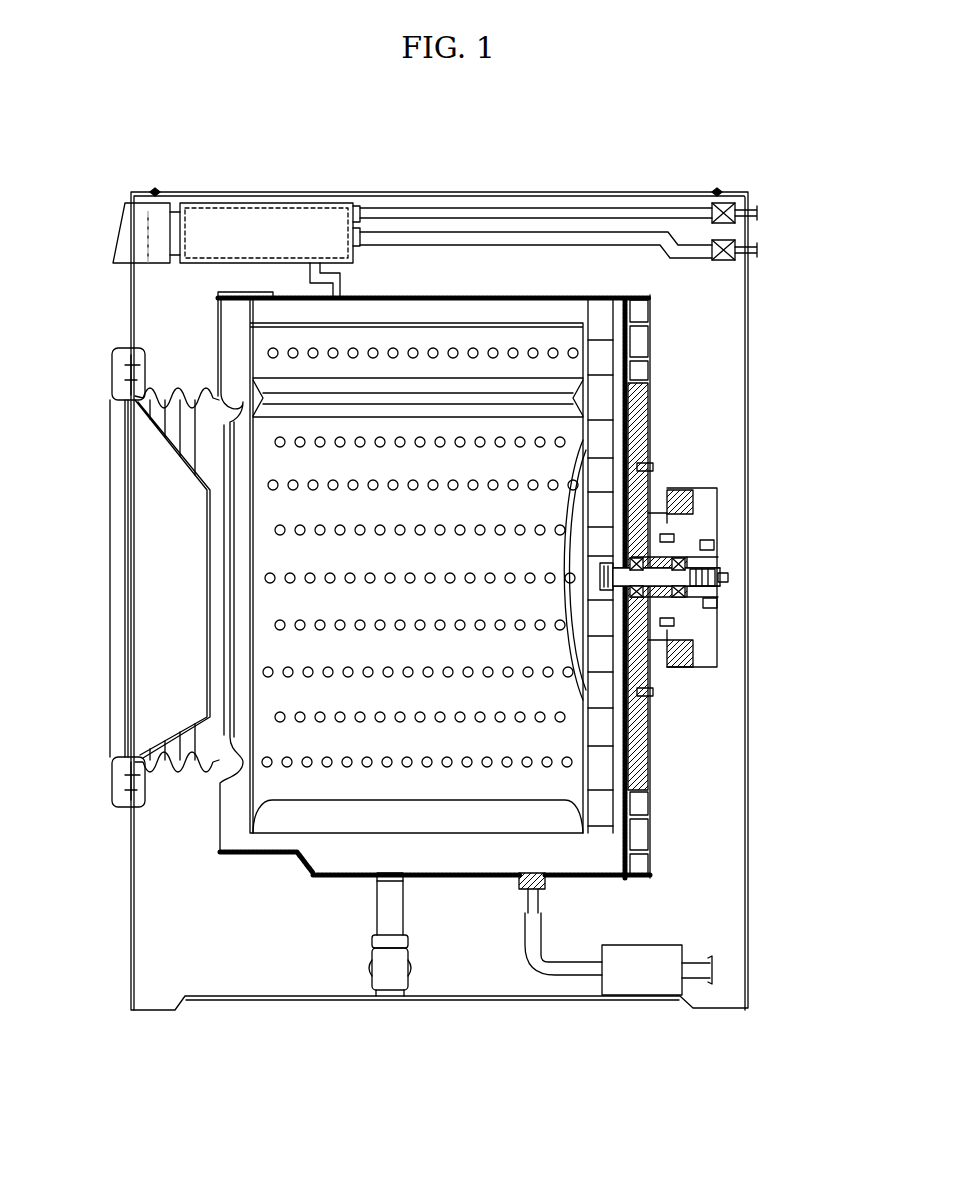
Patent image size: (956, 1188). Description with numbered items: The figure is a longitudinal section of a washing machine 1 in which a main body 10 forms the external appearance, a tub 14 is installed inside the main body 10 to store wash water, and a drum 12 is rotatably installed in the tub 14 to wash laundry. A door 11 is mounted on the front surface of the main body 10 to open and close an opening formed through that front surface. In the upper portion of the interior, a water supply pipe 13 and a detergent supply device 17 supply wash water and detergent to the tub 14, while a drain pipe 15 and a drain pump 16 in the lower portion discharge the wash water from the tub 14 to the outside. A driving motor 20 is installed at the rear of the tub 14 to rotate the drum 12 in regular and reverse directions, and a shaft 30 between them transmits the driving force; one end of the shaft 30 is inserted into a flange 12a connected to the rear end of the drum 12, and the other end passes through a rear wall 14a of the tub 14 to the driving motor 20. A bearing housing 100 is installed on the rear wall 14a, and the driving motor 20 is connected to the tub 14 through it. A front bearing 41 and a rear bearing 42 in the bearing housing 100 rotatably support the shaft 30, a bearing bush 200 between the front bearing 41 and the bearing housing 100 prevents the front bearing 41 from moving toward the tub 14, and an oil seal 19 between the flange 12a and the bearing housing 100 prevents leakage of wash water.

The washing machine 1 is at (455, 132).
The main body 10 is at (522, 192).
The door 11 is at (112, 590).
The drum 12 is at (458, 330).
The flange 12a is at (600, 512).
The water supply pipe 13 is at (588, 213).
The tub 14 is at (612, 294).
The rear wall 14a is at (641, 404).
The drain pipe 15 is at (556, 978).
The drain pump 16 is at (645, 978).
The detergent supply device 17 is at (258, 227).
The oil seal 19 is at (650, 590).
The driving motor 20 is at (730, 491).
The shaft 30 is at (672, 576).
The front bearing 41 is at (662, 586).
The rear bearing 42 is at (718, 604).
The bearing housing 100 is at (690, 549).
The bearing bush 200 is at (684, 592).